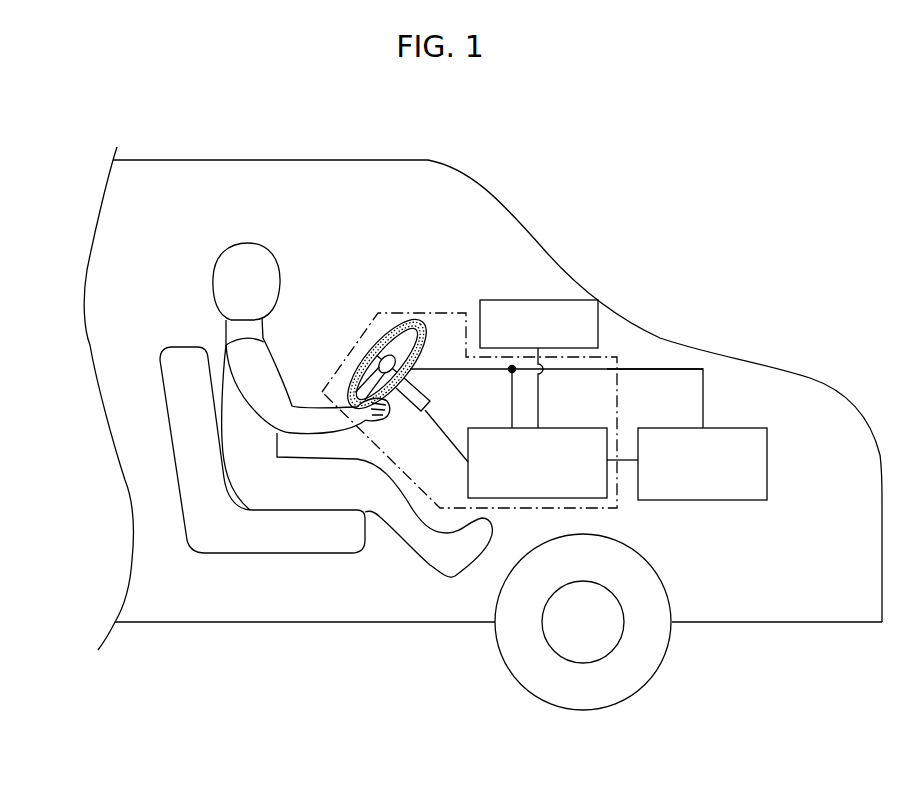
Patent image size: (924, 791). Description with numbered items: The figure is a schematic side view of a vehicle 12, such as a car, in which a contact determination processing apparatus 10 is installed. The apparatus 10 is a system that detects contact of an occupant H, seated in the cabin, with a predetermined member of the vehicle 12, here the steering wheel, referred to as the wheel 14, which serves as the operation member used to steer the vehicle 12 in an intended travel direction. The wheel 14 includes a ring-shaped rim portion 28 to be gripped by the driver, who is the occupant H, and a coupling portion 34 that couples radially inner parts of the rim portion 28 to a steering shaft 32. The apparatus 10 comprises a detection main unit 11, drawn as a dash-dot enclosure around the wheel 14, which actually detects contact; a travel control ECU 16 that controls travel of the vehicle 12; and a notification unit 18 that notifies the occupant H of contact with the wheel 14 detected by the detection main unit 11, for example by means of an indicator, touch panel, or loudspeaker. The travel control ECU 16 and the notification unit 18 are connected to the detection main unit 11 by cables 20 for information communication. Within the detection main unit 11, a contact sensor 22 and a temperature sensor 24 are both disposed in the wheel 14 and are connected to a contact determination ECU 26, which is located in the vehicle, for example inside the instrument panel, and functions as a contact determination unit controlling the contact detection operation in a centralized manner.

The contact determination processing apparatus 10 is at (602, 337).
The detection main unit 11 is at (362, 313).
The vehicle 12 is at (496, 136).
The wheel 14 is at (447, 263).
The travel control ECU 16 is at (767, 459).
The notification unit 18 is at (538, 300).
The cables 20 is at (662, 372).
The contact sensor 22 is at (372, 373).
The temperature sensor 24 is at (375, 352).
The contact determination ECU 26 is at (560, 428).
The rim portion 28 is at (395, 326).
The steering shaft 32 is at (416, 412).
The coupling portion 34 is at (427, 337).
The occupant H is at (222, 260).